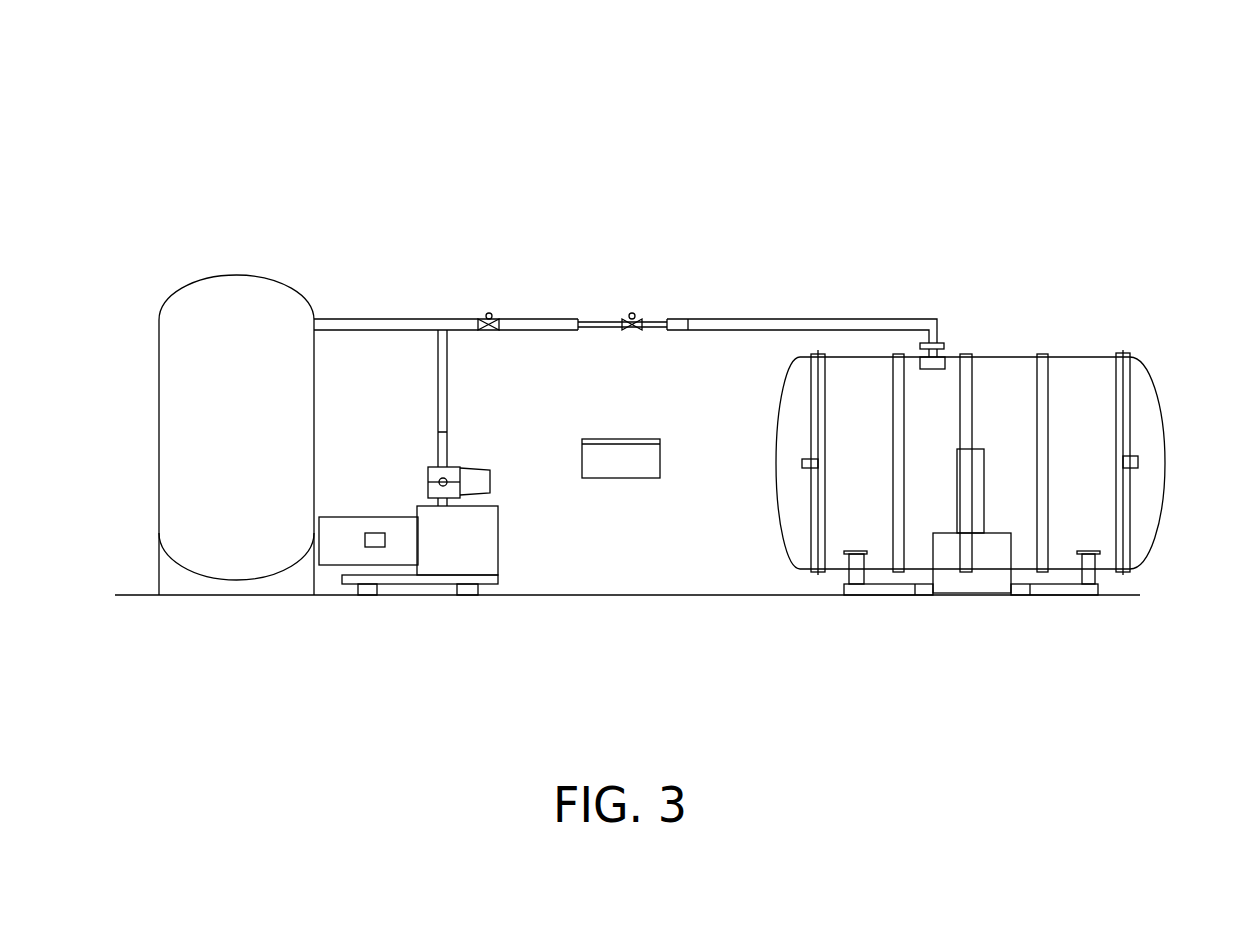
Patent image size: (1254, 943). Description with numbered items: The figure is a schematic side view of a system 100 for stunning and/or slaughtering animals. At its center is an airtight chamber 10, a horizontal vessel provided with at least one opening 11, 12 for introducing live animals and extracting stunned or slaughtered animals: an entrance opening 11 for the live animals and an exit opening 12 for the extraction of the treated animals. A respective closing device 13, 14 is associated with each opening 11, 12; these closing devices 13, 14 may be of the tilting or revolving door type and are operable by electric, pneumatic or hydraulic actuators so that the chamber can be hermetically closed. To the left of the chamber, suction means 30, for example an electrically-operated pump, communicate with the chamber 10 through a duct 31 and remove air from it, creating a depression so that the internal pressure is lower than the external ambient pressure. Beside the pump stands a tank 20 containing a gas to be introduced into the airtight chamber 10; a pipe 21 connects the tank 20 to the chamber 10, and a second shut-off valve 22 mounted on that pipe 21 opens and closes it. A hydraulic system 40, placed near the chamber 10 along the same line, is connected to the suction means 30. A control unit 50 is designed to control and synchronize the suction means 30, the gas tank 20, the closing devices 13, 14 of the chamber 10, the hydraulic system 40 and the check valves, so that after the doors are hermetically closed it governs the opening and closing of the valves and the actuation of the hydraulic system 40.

The system for stunning and/or slaughter 100 is at (850, 152).
The airtight chamber 10 is at (993, 392).
The entrance opening 11 is at (1126, 330).
The exit opening 12 is at (818, 575).
The closing device 13 is at (1147, 457).
The closing device 14 is at (788, 497).
The tank 20 is at (172, 440).
The pipe 21 is at (328, 323).
The second shut-off valve 22 is at (489, 314).
The suction means 30 is at (447, 545).
The duct 31 is at (443, 360).
The hydraulic system 40 is at (635, 292).
The control unit 50 is at (627, 470).